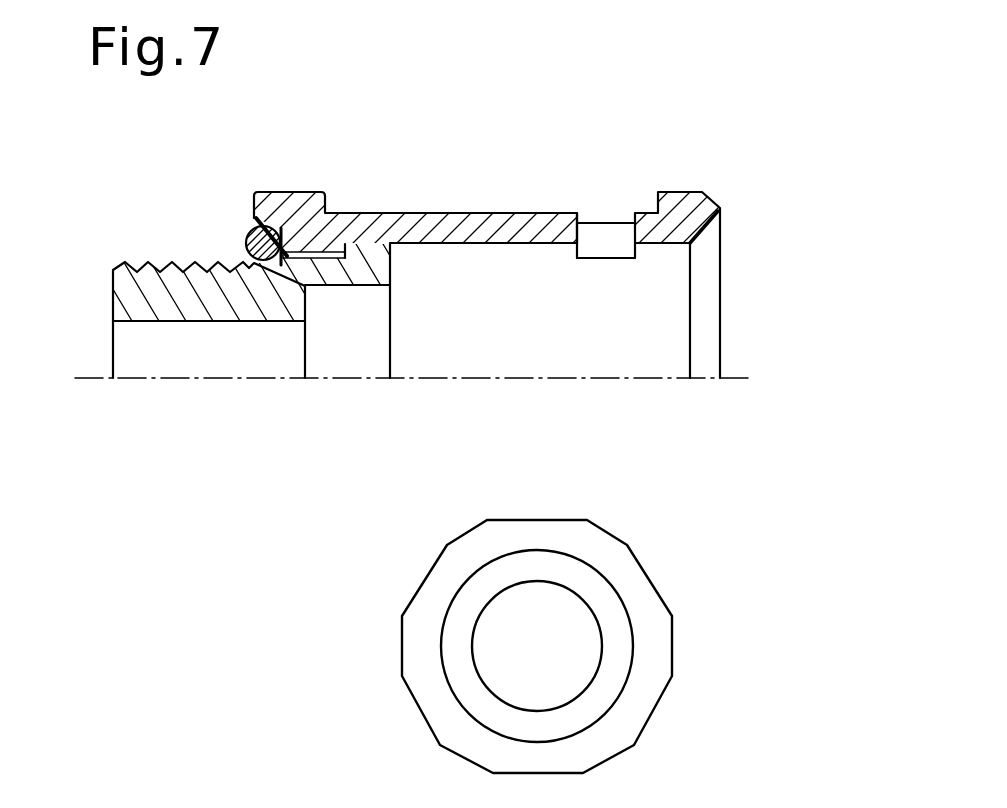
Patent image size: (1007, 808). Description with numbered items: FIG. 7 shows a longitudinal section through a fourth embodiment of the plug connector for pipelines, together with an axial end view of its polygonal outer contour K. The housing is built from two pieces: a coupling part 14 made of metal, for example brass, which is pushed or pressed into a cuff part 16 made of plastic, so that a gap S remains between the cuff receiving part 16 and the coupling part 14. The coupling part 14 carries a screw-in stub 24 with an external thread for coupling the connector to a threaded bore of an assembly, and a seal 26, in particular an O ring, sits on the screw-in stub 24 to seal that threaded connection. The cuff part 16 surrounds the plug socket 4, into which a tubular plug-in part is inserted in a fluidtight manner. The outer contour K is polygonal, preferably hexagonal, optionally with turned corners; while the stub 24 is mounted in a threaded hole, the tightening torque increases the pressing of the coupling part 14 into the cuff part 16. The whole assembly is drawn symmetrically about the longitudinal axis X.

The coupling part 14 is at (233, 320).
The screw-in stub 24 is at (123, 292).
The seal 26 is at (247, 233).
The outer contour K is at (370, 223).
The cuff part 16 is at (428, 225).
The plug socket 4 is at (423, 290).
The gap S is at (328, 258).
The longitudinal axis X is at (414, 380).